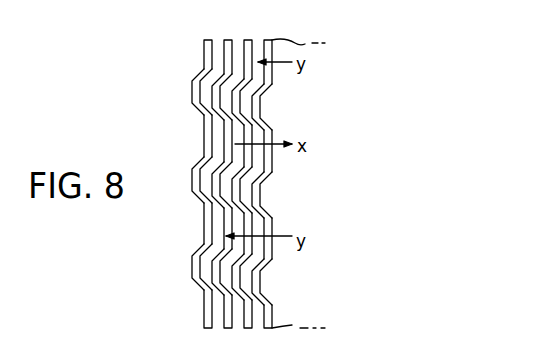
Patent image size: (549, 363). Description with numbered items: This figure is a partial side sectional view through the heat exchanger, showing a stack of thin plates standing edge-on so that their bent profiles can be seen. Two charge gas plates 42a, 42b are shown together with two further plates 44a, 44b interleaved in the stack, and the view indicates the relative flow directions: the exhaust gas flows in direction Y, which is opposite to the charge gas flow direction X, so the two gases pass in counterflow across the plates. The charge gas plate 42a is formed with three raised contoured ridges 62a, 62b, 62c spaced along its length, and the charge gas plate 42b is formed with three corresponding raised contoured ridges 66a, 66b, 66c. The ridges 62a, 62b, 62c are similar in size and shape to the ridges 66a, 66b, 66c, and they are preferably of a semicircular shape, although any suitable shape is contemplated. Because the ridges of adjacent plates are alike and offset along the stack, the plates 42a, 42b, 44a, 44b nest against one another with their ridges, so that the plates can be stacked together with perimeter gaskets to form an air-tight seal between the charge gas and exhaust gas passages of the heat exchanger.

The charge gas plate 42a is at (161, 181).
The charge gas plate 42b is at (243, 44).
The second plate 44a is at (218, 217).
The second plate 44b is at (290, 184).
The raised contoured ridge 62a is at (192, 98).
The raised contoured ridge 62b is at (195, 166).
The raised contoured ridge 62c is at (193, 271).
The raised contoured ridge 66a is at (265, 95).
The raised contoured ridge 66b is at (256, 171).
The raised contoured ridge 66c is at (262, 267).